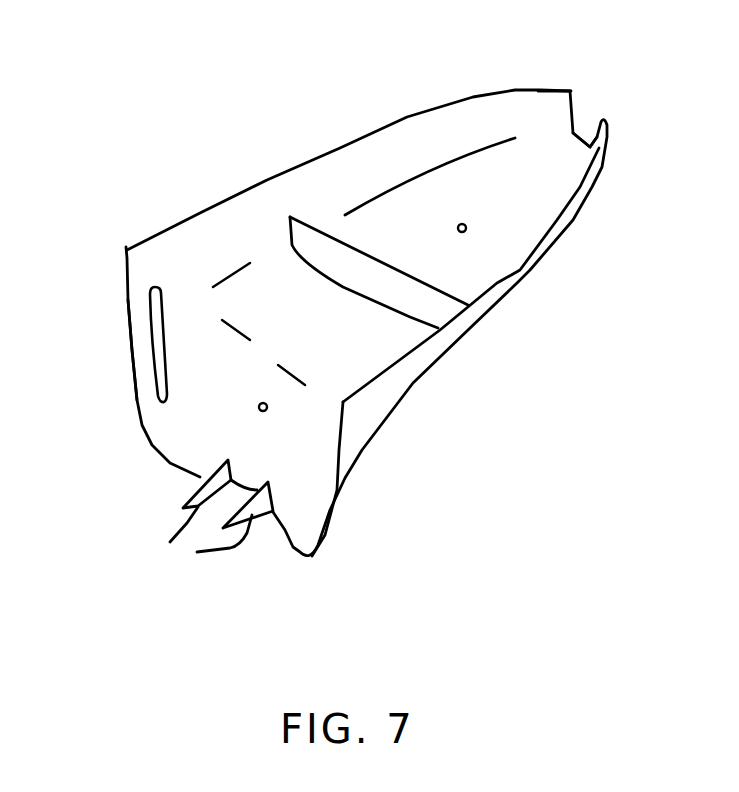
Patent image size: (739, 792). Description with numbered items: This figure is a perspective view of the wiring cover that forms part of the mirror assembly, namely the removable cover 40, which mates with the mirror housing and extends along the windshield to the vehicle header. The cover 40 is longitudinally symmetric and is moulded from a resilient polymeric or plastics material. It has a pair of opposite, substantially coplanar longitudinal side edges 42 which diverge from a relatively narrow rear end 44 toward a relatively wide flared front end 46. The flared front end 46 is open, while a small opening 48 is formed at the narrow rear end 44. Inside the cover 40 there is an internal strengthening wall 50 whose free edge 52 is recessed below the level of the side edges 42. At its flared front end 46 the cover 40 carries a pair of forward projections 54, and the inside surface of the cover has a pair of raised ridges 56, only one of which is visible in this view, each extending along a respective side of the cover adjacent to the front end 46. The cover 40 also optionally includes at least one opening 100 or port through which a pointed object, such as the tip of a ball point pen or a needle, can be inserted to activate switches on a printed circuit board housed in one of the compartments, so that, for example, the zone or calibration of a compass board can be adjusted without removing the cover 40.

The removable cover 40 is at (474, 394).
The longitudinal side edges 42 is at (324, 150).
The narrow rear end 44 is at (547, 88).
The flared front end 46 is at (137, 353).
The small opening 48 is at (592, 113).
The internal strengthening wall 50 is at (343, 298).
The free edge 52 is at (365, 254).
The forward projections 54 is at (210, 527).
The raised ridges 56 is at (153, 320).
The opening 100 is at (466, 229).